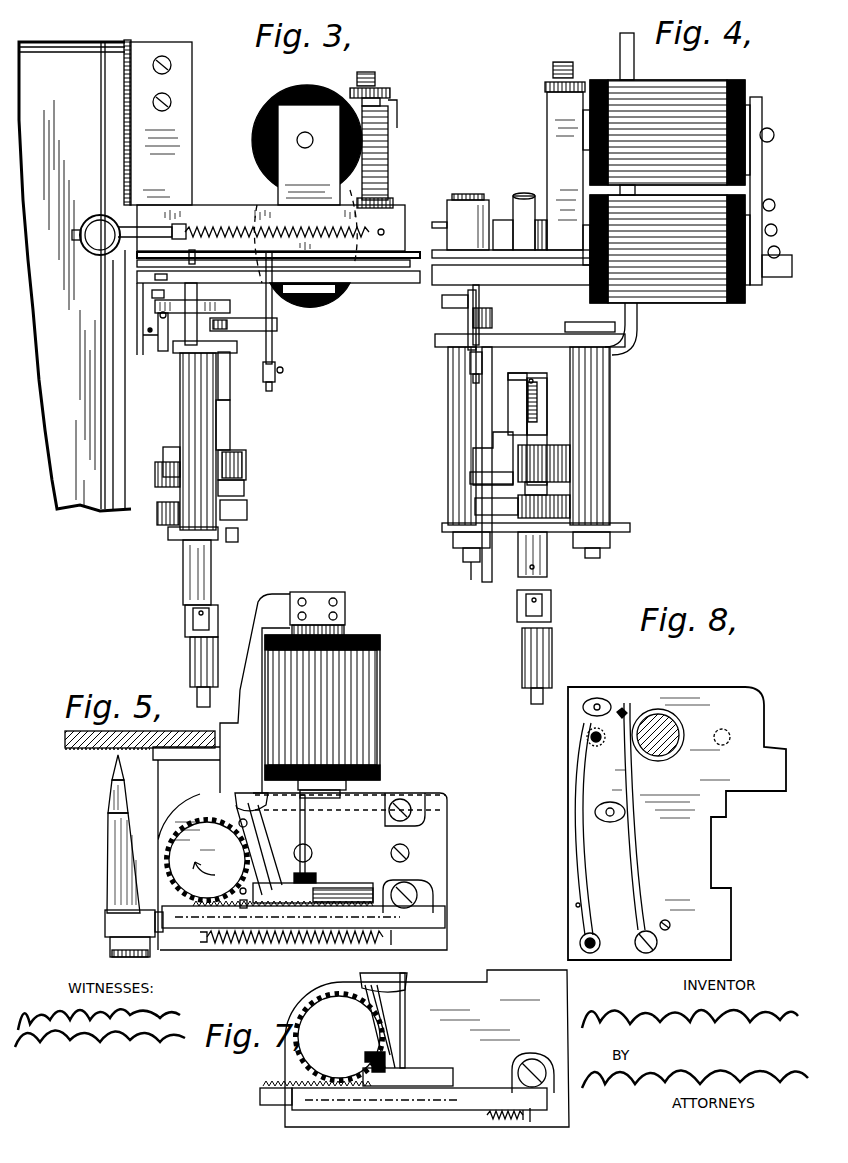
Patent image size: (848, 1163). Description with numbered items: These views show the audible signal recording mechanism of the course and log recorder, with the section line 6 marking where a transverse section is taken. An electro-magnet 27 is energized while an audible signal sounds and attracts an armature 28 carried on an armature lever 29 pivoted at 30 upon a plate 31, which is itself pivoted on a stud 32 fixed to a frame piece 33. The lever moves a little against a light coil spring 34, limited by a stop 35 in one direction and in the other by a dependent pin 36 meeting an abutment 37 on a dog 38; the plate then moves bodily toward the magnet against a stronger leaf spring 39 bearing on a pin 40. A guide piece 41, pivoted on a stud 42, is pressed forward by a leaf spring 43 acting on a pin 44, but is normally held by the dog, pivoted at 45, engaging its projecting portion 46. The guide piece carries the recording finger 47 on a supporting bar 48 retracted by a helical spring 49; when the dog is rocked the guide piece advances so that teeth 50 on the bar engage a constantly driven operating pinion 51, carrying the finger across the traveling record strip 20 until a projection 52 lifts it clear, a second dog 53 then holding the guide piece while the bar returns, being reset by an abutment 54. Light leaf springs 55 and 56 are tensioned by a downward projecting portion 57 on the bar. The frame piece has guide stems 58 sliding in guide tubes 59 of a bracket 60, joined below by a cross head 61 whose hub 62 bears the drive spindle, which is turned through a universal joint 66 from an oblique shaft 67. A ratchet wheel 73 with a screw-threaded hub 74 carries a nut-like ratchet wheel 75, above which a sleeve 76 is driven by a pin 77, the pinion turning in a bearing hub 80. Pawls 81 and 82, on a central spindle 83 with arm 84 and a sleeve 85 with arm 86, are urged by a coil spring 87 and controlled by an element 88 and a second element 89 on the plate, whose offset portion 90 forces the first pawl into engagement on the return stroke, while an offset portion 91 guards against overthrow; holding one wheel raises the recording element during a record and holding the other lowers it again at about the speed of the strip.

In FIG. 3, the section line 6 is at (271, 216).
In FIG. 3, the traveling record strip 20 is at (75, 276).
In FIG. 5, the traveling record strip 20 is at (65, 749).
In FIG. 3, the electro-magnet 27 is at (307, 188).
In FIG. 4, the electro-magnet 27 is at (687, 168).
In FIG. 5, the electro-magnet 27 is at (382, 685).
In FIG. 3, the armature 28 is at (309, 155).
In FIG. 5, the armature 28 is at (312, 780).
In FIG. 5, the armature lever 29 is at (390, 796).
In FIG. 5, the pivot 30 is at (420, 793).
In FIG. 3, the plate 31 is at (405, 255).
In FIG. 4, the plate 31 is at (511, 254).
In FIG. 5, the plate 31 is at (303, 871).
In FIG. 7, the plate 31 is at (427, 1048).
In FIG. 4, the stud 32 is at (522, 196).
In FIG. 5, the stud 32 is at (420, 860).
In FIG. 8, the stud 32 is at (670, 930).
In FIG. 3, the frame piece 33 is at (366, 281).
In FIG. 4, the frame piece 33 is at (511, 275).
In FIG. 5, the frame piece 33 is at (201, 855).
In FIG. 8, the frame piece 33 is at (677, 823).
In FIG. 3, the light coil spring 34 is at (393, 165).
In FIG. 4, the light coil spring 34 is at (565, 156).
In FIG. 5, the stop 35 is at (303, 845).
In FIG. 5, the dependent pin 36 is at (240, 812).
In FIG. 7, the dependent pin 36 is at (412, 1000).
In FIG. 5, the abutment 37 is at (255, 792).
In FIG. 7, the abutment 37 is at (410, 980).
In FIG. 5, the dog 38 is at (245, 797).
In FIG. 7, the dog 38 is at (409, 1024).
In FIG. 3, the leaf spring 39 is at (158, 278).
In FIG. 8, the leaf spring 39 is at (633, 845).
In FIG. 8, the pin 40 is at (622, 708).
In FIG. 5, the guide piece 41 is at (194, 930).
In FIG. 7, the guide piece 41 is at (460, 1092).
In FIG. 4, the stud 42 is at (462, 200).
In FIG. 5, the stud 42 is at (420, 896).
In FIG. 7, the stud 42 is at (532, 1060).
In FIG. 3, the leaf spring 43 is at (228, 265).
In FIG. 8, the leaf spring 43 is at (574, 802).
In FIG. 3, the pin 44 is at (182, 249).
In FIG. 8, the pin 44 is at (590, 737).
In FIG. 5, the pivot 45 is at (239, 825).
In FIG. 5, the projecting portion 46 is at (244, 910).
In FIG. 3, the finger 47 is at (98, 228).
In FIG. 5, the finger 47 is at (108, 866).
In FIG. 3, the supporting bar 48 is at (152, 230).
In FIG. 5, the supporting bar 48 is at (160, 908).
In FIG. 7, the supporting bar 48 is at (262, 1097).
In FIG. 3, the helical spring 49 is at (216, 228).
In FIG. 5, the helical spring 49 is at (305, 935).
In FIG. 7, the helical spring 49 is at (492, 1130).
In FIG. 5, the teeth 50 is at (213, 908).
In FIG. 7, the teeth 50 is at (290, 1083).
In FIG. 4, the operating pinion 51 is at (501, 220).
In FIG. 5, the operating pinion 51 is at (207, 860).
In FIG. 7, the operating pinion 51 is at (339, 1037).
In FIG. 8, the operating pinion 51 is at (662, 730).
In FIG. 5, the projection 52 is at (312, 902).
In FIG. 5, the second dog 53 is at (312, 872).
In FIG. 7, the second dog 53 is at (383, 1058).
In FIG. 5, the abutment 54 is at (240, 890).
In FIG. 5, the leaf spring 55 is at (289, 837).
In FIG. 7, the leaf spring 55 is at (421, 1020).
In FIG. 5, the leaf spring 56 is at (310, 884).
In FIG. 7, the leaf spring 56 is at (408, 1050).
In FIG. 5, the downward projecting portion 57 is at (392, 852).
In FIG. 3, the guide stems 58 is at (188, 327).
In FIG. 4, the guide stems 58 is at (625, 335).
In FIG. 3, the guide tubes 59 is at (197, 430).
In FIG. 4, the guide tubes 59 is at (462, 385).
In FIG. 3, the bracket 60 is at (186, 118).
In FIG. 4, the bracket 60 is at (640, 320).
In FIG. 5, the bracket 60 is at (215, 758).
In FIG. 4, the cross head 61 is at (620, 528).
In FIG. 4, the hub 62 is at (548, 542).
In FIG. 3, the universal joint 66 is at (190, 612).
In FIG. 4, the universal joint 66 is at (552, 612).
In FIG. 3, the oblique shaft 67 is at (200, 690).
In FIG. 4, the oblique shaft 67 is at (531, 690).
In FIG. 3, the ratchet wheel 73 is at (160, 516).
In FIG. 4, the ratchet wheel 73 is at (572, 512).
In FIG. 4, the screw-threaded hub 74 is at (547, 400).
In FIG. 3, the ratchet wheel 75 is at (156, 480).
In FIG. 4, the ratchet wheel 75 is at (572, 470).
In FIG. 3, the sleeve 76 is at (168, 458).
In FIG. 4, the sleeve 76 is at (560, 416).
In FIG. 4, the pin 77 is at (547, 375).
In FIG. 8, the bearing hub 80 is at (684, 736).
In FIG. 3, the pawl 81 is at (246, 510).
In FIG. 4, the pawl 81 is at (500, 505).
In FIG. 3, the pawl 82 is at (240, 462).
In FIG. 4, the pawl 82 is at (500, 462).
In FIG. 3, the central spindle 83 is at (231, 394).
In FIG. 4, the central spindle 83 is at (484, 548).
In FIG. 3, the arm 84 is at (156, 305).
In FIG. 4, the arm 84 is at (458, 300).
In FIG. 3, the sleeve 85 is at (231, 422).
In FIG. 4, the sleeve 85 is at (486, 393).
In FIG. 3, the arm 86 is at (278, 325).
In FIG. 4, the arm 86 is at (494, 320).
In FIG. 3, the coil spring 87 is at (242, 498).
In FIG. 4, the coil spring 87 is at (485, 488).
In FIG. 3, the element 88 is at (266, 300).
In FIG. 4, the element 88 is at (470, 335).
In FIG. 8, the element 88 is at (598, 818).
In FIG. 3, the second element 89 is at (152, 294).
In FIG. 8, the second element 89 is at (596, 700).
In FIG. 3, the offset portion 90 is at (158, 322).
In FIG. 3, the offset portion 91 is at (280, 366).
In FIG. 4, the offset portion 91 is at (470, 362).